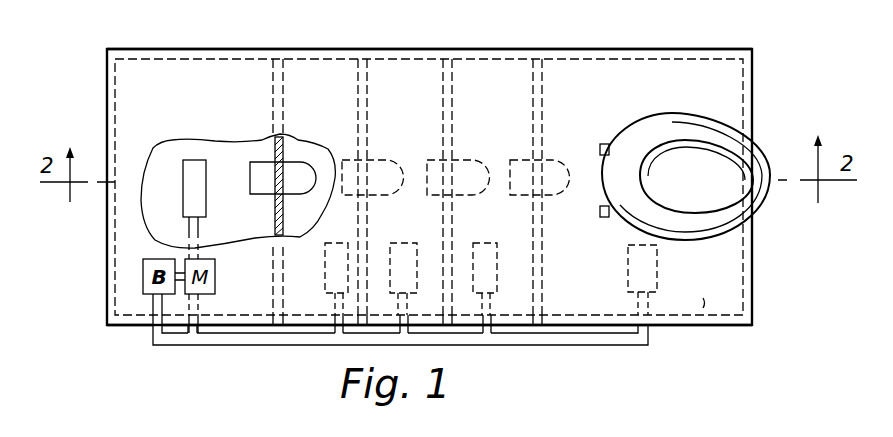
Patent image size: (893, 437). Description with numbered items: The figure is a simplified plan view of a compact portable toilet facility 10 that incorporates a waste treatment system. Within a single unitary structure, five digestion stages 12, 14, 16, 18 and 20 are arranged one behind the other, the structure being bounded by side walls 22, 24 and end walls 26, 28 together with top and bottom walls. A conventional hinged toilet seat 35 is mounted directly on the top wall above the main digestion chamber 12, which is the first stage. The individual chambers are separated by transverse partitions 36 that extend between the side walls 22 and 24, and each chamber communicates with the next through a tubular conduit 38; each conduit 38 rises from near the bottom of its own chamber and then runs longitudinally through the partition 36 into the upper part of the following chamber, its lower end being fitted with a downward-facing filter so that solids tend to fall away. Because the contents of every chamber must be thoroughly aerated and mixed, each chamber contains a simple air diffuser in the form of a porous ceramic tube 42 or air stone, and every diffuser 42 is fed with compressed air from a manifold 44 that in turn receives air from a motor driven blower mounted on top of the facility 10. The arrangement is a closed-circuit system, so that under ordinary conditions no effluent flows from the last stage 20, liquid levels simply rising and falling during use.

The portable toilet facility 10 is at (670, 46).
The main digestion chamber 12 is at (694, 336).
The digestion stage 14 is at (500, 363).
The digestion stage 16 is at (373, 344).
The digestion stage 18 is at (306, 355).
The last digestion stage 20 is at (232, 338).
The side wall 22 is at (152, 53).
The side wall 24 is at (132, 337).
The end wall 26 is at (112, 82).
The end wall 28 is at (757, 103).
The hinged toilet seat 35 is at (753, 211).
The transverse partition 36 is at (292, 139).
The tubular conduit 38 is at (285, 184).
The porous ceramic tube 42 is at (190, 184).
The manifold 44 is at (197, 347).